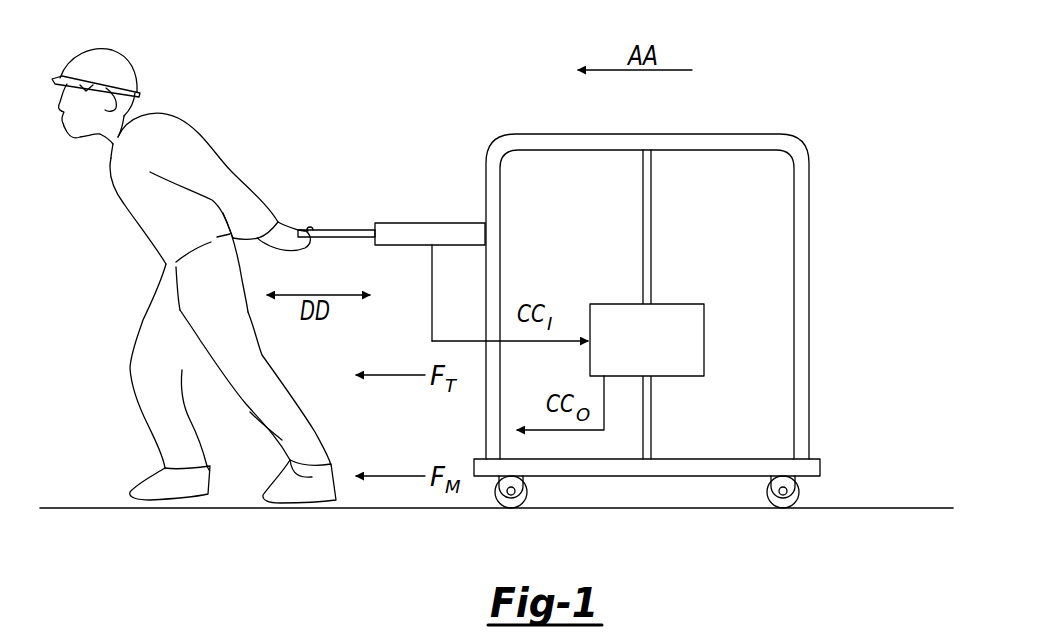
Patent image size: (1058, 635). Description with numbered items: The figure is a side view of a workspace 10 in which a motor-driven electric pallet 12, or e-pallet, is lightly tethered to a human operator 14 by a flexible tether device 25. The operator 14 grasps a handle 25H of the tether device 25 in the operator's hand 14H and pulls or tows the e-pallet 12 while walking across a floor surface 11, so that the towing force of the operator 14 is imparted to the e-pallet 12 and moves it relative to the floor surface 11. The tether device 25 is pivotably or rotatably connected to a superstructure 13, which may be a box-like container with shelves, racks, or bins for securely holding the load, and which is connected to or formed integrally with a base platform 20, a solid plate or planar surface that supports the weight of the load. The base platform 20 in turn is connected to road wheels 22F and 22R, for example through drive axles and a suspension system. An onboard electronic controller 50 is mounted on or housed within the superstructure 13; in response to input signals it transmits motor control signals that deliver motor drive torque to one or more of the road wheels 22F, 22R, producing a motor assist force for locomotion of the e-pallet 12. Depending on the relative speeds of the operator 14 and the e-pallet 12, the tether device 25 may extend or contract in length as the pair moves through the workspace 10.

The workspace 10 is at (860, 44).
The floor surface 11 is at (940, 503).
The motor-driven electric pallet 12 is at (813, 167).
The superstructure 13 is at (810, 231).
The human operator 14 is at (198, 84).
The operator's hand 14H is at (305, 204).
The base platform 20 is at (820, 468).
The front road wheel 22F is at (507, 516).
The rear road wheel 22R is at (778, 516).
The flexible tether device 25 is at (441, 200).
The handle 25H is at (320, 220).
The electronic controller 50 is at (674, 304).